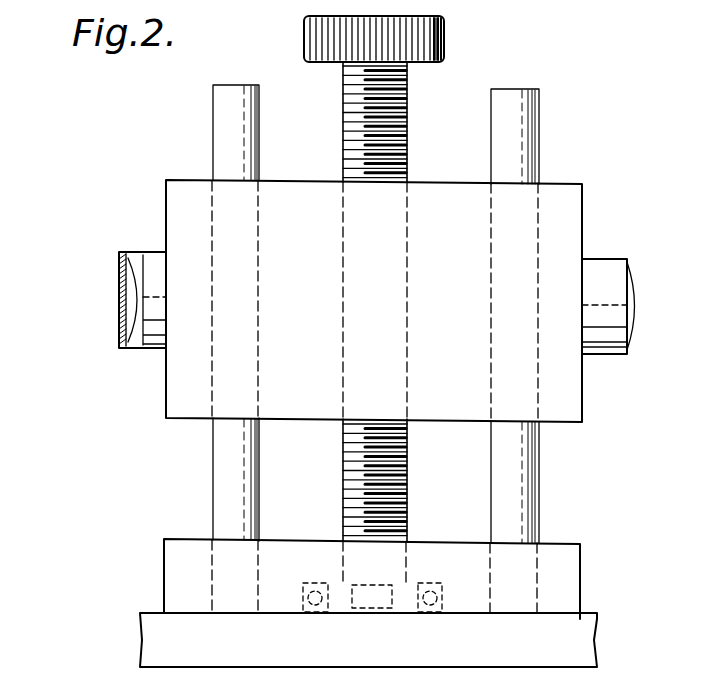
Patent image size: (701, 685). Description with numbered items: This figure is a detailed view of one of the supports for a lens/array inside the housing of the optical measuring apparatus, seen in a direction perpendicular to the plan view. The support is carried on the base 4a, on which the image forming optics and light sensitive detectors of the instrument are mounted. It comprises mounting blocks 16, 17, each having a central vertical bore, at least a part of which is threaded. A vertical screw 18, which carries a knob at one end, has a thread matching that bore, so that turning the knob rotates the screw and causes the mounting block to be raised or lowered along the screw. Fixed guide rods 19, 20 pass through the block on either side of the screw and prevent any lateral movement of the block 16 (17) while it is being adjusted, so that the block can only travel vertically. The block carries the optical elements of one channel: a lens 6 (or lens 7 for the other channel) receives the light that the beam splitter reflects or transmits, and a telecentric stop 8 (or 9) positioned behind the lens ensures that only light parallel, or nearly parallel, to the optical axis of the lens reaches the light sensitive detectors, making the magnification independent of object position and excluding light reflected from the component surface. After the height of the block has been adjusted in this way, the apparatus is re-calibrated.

The mounting block 16 is at (460, 283).
The mounting block 17 is at (445, 306).
The vertical screw 18 is at (383, 133).
The guide rod 19 is at (223, 137).
The guide rod 20 is at (515, 131).
The telecentric stop 8 is at (118, 302).
The telecentric stop 9 is at (118, 302).
The lens 6 is at (642, 237).
The lens 7 is at (632, 262).
The base 4a is at (167, 628).